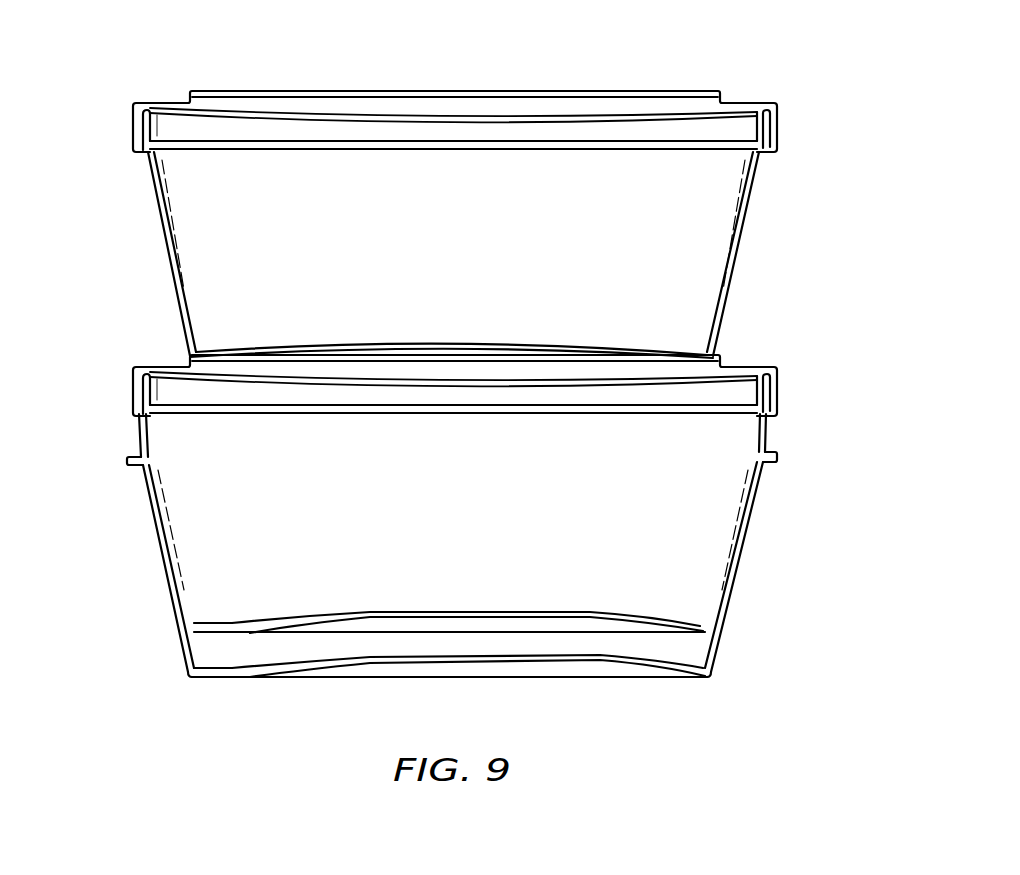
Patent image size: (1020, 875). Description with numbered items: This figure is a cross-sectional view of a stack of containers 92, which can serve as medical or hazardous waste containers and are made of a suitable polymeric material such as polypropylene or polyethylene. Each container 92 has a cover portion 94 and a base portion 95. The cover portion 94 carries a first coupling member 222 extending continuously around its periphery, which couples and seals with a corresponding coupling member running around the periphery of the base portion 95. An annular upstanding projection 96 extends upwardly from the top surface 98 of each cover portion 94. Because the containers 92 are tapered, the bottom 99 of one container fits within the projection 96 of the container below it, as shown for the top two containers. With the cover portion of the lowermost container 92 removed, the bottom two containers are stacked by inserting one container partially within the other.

The container 92 is at (158, 263).
The cover portion 94 is at (752, 100).
The base portion 95 is at (163, 220).
The annular upstanding projection 96 is at (722, 93).
The top surface 98 is at (165, 103).
The bottom 99 is at (666, 355).
The first coupling member 222 is at (778, 126).